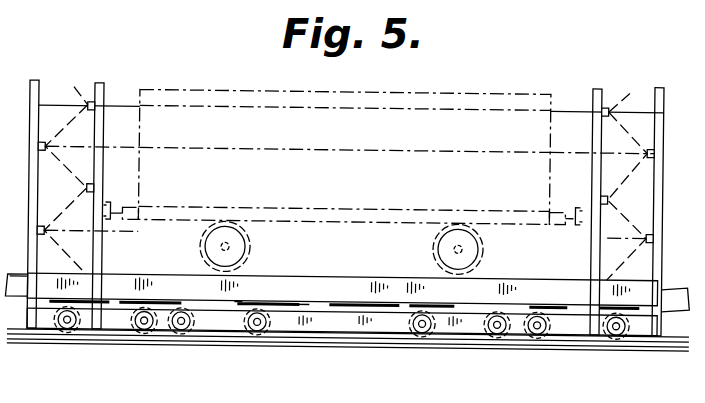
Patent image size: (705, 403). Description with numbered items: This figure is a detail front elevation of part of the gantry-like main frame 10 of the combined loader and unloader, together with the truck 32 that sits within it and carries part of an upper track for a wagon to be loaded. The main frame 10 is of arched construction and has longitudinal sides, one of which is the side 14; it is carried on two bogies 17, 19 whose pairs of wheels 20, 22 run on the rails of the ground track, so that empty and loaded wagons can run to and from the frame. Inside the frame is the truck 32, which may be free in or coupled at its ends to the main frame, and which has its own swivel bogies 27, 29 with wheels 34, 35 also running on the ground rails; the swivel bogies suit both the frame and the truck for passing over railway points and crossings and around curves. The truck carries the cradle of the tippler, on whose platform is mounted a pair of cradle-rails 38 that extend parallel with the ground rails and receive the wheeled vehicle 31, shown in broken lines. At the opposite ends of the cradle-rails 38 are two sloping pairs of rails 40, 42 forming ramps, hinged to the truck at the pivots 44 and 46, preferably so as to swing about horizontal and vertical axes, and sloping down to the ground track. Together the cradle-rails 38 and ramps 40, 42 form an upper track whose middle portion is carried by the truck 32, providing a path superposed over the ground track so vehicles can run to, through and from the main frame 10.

The main frame 10 is at (22, 116).
The longitudinal side 14 is at (362, 335).
The bogie 17 is at (137, 277).
The bogie 19 is at (575, 304).
The wheels 20 is at (136, 336).
The wheels 22 is at (606, 340).
The bogie 27 is at (240, 304).
The bogie 29 is at (447, 305).
The wheeled vehicle 31 is at (436, 93).
The truck 32 is at (287, 306).
The wheels 34 is at (181, 336).
The wheels 35 is at (421, 342).
The cradle-rails 38 is at (329, 277).
The ramp rails 40 is at (8, 300).
The ramp rails 42 is at (690, 306).
The pivot 44 is at (27, 278).
The pivot 46 is at (660, 287).